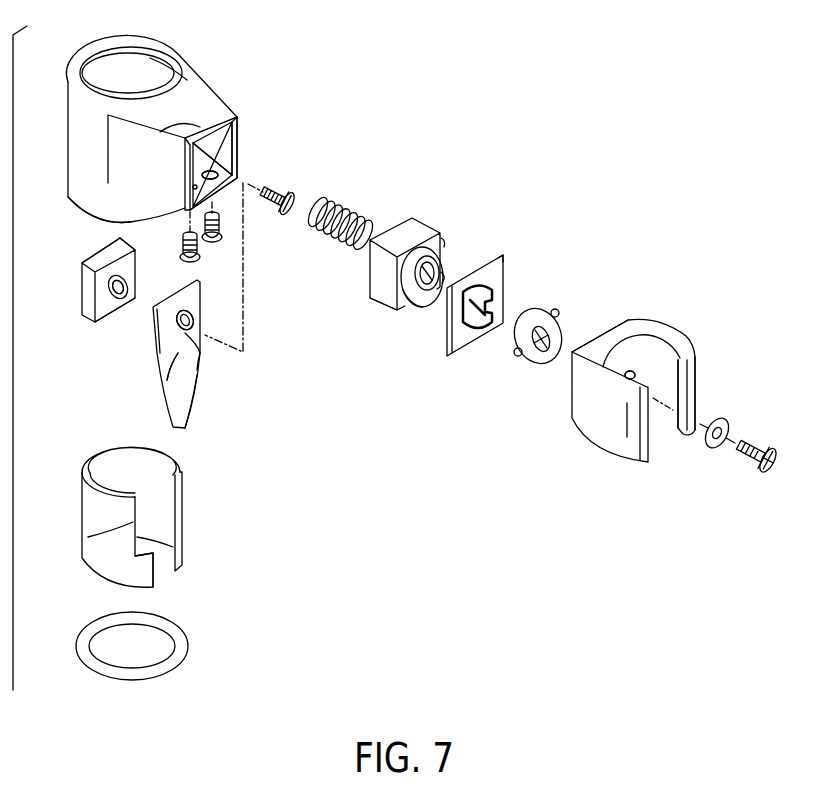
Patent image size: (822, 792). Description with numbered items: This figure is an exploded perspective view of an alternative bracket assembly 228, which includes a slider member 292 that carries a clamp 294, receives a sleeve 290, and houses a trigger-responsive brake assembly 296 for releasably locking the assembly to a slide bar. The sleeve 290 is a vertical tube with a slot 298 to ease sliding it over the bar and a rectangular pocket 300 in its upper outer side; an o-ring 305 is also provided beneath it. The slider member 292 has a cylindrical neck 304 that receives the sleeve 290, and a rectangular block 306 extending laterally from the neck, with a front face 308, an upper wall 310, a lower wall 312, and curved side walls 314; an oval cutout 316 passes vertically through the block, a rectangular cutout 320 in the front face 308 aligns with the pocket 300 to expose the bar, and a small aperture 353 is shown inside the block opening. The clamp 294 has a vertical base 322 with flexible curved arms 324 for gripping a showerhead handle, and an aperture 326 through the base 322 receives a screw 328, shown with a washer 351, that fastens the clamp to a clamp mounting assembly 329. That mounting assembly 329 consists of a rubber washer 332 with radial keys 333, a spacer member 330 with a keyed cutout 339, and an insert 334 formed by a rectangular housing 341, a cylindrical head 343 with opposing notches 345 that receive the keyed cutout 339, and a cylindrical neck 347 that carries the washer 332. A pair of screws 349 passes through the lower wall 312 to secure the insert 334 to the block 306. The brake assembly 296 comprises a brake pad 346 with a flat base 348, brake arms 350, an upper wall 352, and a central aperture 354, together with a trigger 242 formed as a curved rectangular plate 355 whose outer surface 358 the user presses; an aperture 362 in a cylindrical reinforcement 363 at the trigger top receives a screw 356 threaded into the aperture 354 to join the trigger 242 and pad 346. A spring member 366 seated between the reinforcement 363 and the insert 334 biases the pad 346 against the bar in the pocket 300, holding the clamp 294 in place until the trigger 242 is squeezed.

The bracket assembly 228 is at (332, 437).
The trigger 242 is at (218, 416).
The sleeve 290 is at (75, 508).
The slider member 292 is at (62, 117).
The clamp 294 is at (595, 452).
The brake assembly 296 is at (297, 323).
The slot 298 is at (110, 587).
The rectangular pocket 300 is at (88, 537).
The cylindrical neck 304 is at (72, 183).
The O-ring 305 is at (190, 640).
The rectangular block 306 is at (212, 82).
The front face 308 is at (240, 115).
The upper wall 310 is at (187, 80).
The lower wall 312 is at (230, 157).
The curved side walls 314 is at (118, 179).
The oval-shaped cutout 316 is at (240, 143).
The rectangular cutout 320 is at (183, 127).
The base 322 is at (607, 337).
The curved arms 324 is at (683, 337).
The cylindrical aperture 326 is at (632, 373).
The screw 328 is at (770, 477).
The clamp mounting assembly 329 is at (552, 217).
The spacer member 330 is at (453, 347).
The rubber washer 332 is at (538, 367).
The radial keys 333 is at (545, 307).
The insert 334 is at (410, 220).
The keyed cutout 339 is at (517, 242).
The rectangular housing 341 is at (383, 305).
The cylindrical head 343 is at (427, 303).
The notches 345 is at (440, 250).
The brake pad 346 is at (88, 322).
The cylindrical neck 347 is at (443, 267).
The flat base 348 is at (110, 307).
The screws 349 is at (200, 260).
The brake arms 350 is at (80, 280).
The washer 351 is at (727, 417).
The upper wall 352 is at (118, 250).
The aperture 353 is at (200, 173).
The aperture 354 is at (107, 290).
The rectangular plate 355 is at (200, 397).
The screw 356 is at (293, 197).
The laterally outer surface 358 is at (177, 377).
The aperture 362 is at (187, 308).
The cylindrical reinforcement 363 is at (200, 363).
The spring member 366 is at (308, 200).